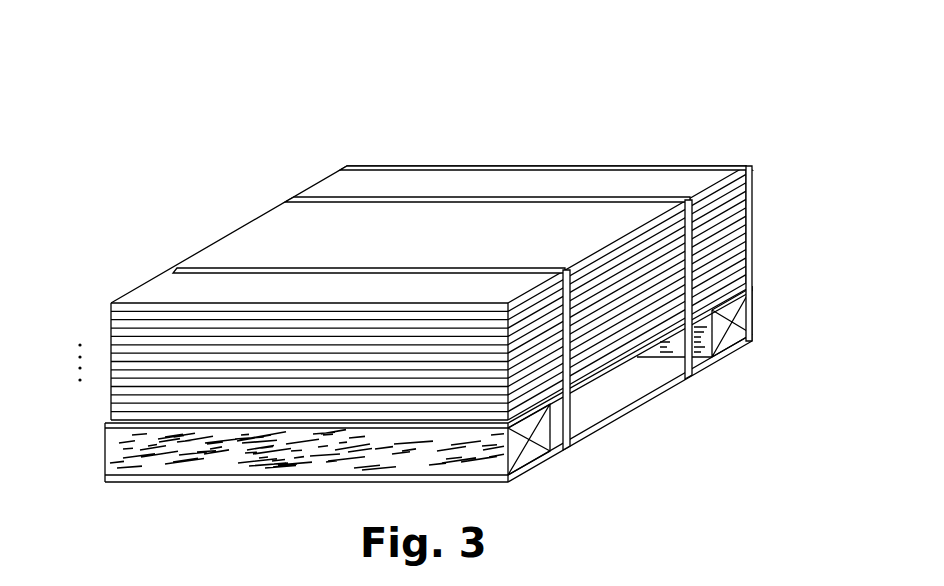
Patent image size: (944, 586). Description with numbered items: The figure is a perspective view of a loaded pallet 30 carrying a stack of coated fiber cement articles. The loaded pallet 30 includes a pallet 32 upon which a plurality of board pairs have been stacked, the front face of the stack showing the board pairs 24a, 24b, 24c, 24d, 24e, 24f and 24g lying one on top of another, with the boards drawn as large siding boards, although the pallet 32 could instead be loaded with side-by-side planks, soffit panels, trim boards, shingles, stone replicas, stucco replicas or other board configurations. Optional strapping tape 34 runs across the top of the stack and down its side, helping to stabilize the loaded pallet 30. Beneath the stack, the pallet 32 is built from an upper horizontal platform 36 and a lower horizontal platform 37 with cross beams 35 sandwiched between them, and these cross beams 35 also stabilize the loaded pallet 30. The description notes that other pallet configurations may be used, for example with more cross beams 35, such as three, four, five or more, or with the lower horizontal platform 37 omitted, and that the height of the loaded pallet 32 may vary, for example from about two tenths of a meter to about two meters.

The loaded pallet 30 is at (427, 274).
The board pair 24a is at (105, 303).
The board pair 24b is at (105, 322).
The board pair 24c is at (428, 280).
The board pair 24d is at (428, 297).
The board pair 24e is at (428, 313).
The board pair 24f is at (105, 388).
The board pair 24g is at (105, 406).
The pallet 32 is at (450, 392).
The strapping tape 34 is at (302, 267).
The cross beams 35 is at (533, 452).
The upper horizontal platform 36 is at (603, 373).
The lower horizontal platform 37 is at (670, 387).